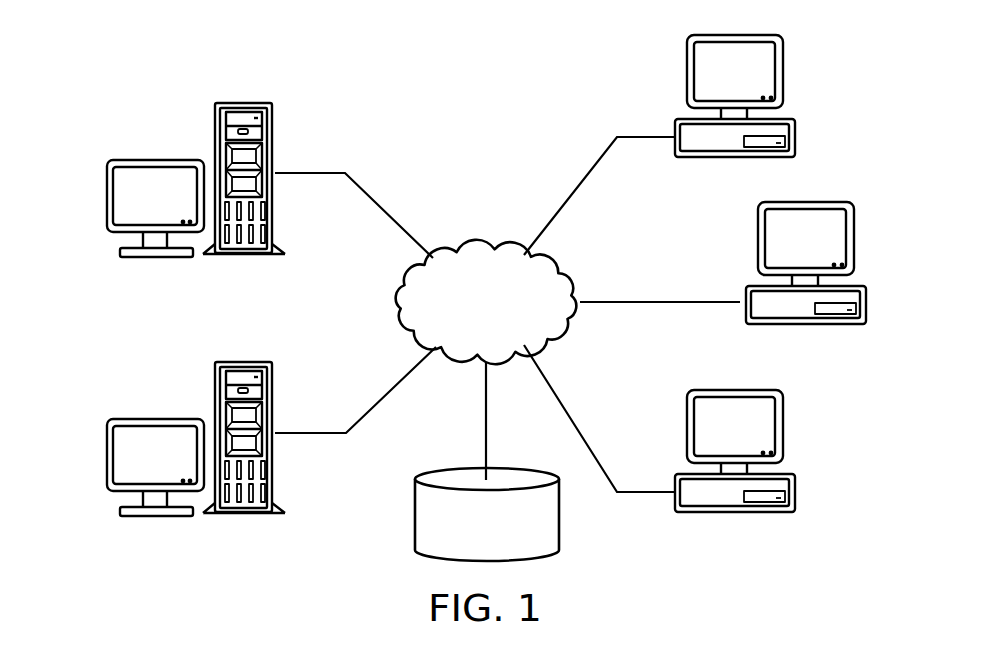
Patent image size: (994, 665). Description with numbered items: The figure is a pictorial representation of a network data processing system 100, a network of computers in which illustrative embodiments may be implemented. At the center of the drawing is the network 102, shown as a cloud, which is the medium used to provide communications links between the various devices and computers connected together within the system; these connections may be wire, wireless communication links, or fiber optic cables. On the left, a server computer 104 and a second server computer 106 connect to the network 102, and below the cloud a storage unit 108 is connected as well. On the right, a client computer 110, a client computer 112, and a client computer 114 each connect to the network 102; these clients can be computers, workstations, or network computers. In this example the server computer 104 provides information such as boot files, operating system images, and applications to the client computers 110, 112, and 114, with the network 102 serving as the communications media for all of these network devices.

The network data processing system 100 is at (353, 83).
The network 102 is at (458, 247).
The server computer 104 is at (107, 195).
The server computer 106 is at (107, 456).
The storage unit 108 is at (414, 513).
The client computer 110 is at (797, 128).
The client computer 112 is at (867, 311).
The client computer 114 is at (797, 501).